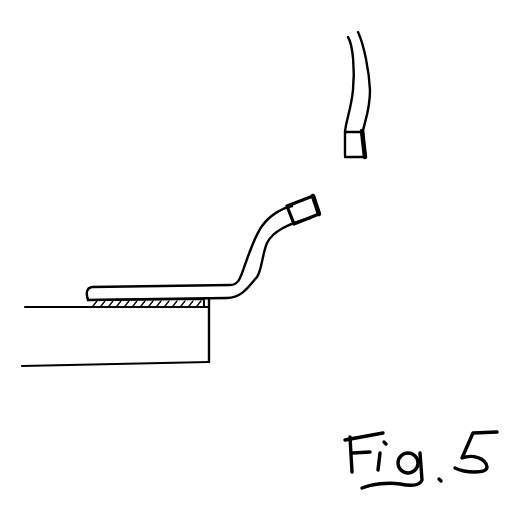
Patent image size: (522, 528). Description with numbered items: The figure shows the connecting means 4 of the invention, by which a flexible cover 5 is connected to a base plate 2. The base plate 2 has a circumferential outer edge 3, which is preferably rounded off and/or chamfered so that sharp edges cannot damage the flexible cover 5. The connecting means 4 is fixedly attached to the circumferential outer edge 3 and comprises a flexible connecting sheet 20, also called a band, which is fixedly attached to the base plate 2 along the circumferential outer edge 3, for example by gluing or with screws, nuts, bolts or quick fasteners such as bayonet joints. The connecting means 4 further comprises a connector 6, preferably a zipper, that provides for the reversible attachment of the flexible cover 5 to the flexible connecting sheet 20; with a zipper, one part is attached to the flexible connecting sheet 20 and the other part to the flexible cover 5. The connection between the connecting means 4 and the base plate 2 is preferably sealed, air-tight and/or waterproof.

The base plate 2 is at (185, 343).
The circumferential outer edge 3 is at (128, 397).
The connecting means 4 is at (222, 225).
The flexible cover 5 is at (370, 70).
The connector 6 is at (367, 138).
The flexible connecting sheet 20 is at (260, 275).